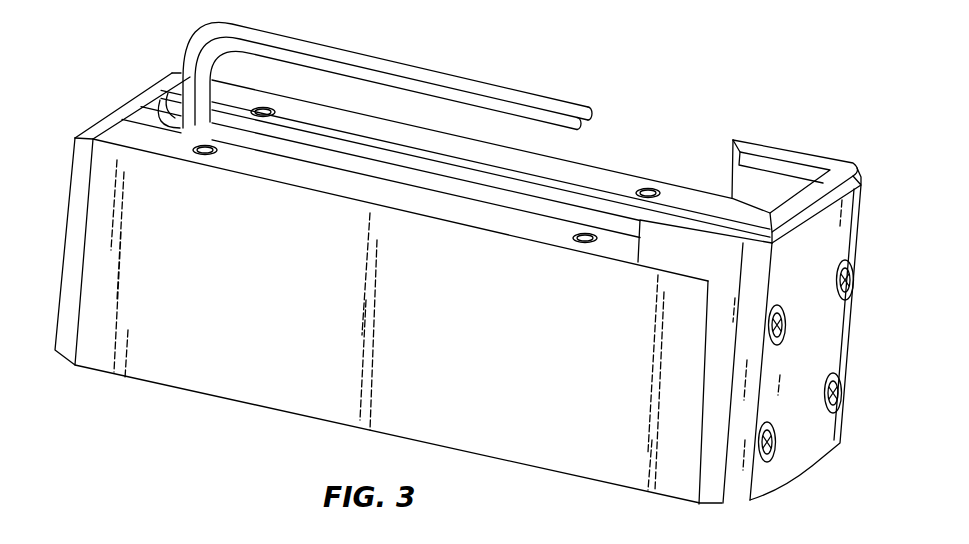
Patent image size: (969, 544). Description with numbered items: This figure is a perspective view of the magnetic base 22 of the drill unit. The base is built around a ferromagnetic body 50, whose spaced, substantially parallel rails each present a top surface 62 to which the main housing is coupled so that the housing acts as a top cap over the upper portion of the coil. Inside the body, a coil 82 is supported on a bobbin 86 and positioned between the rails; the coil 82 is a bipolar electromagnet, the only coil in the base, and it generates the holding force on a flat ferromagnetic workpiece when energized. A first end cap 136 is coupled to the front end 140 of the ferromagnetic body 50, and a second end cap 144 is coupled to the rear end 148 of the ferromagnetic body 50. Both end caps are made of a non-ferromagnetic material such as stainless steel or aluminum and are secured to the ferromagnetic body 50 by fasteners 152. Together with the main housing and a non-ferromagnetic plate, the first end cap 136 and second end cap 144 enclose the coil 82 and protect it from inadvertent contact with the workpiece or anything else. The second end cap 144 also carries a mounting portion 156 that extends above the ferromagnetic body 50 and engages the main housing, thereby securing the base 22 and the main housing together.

The magnetic base 22 is at (86, 72).
The ferromagnetic body 50 is at (220, 358).
The top surface 62 is at (557, 230).
The coil 82 is at (163, 122).
The bobbin 86 is at (233, 127).
The first end cap 136 is at (78, 217).
The front end 140 is at (80, 323).
The second end cap 144 is at (830, 348).
The rear end 148 is at (700, 453).
The fasteners 152 is at (837, 292).
The mounting portion 156 is at (793, 157).